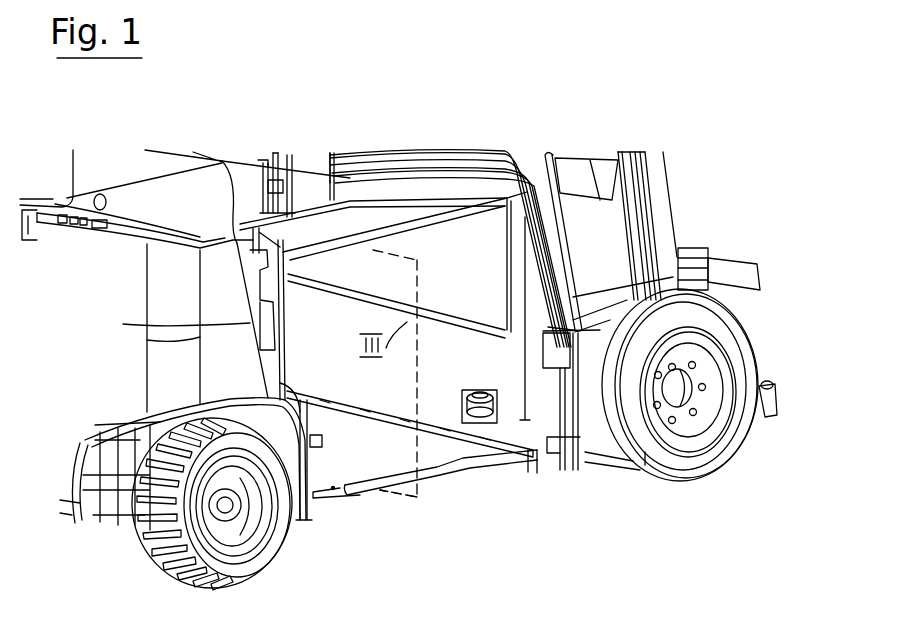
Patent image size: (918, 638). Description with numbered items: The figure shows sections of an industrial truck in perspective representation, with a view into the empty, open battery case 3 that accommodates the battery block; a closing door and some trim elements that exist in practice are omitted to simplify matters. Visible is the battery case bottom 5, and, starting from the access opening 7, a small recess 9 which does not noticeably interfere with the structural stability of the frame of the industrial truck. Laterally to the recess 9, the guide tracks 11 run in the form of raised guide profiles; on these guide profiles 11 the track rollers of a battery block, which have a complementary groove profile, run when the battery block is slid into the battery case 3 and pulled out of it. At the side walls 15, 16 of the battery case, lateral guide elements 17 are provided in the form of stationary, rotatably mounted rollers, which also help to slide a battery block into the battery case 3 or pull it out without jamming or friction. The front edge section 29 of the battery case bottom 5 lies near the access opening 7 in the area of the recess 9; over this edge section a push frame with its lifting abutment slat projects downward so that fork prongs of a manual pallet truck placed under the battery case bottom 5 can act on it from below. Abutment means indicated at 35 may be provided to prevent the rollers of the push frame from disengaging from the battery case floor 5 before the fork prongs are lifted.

The battery case 3 is at (455, 350).
The battery case bottom 5 is at (453, 450).
The access opening 7 is at (430, 280).
The recess 9 is at (408, 480).
The guide tracks 11 is at (333, 490).
The side wall 15 is at (504, 358).
The side wall 16 is at (296, 527).
The lateral guide elements 17 is at (498, 408).
The front edge section 29 is at (436, 450).
The abutment means 35 is at (330, 497).